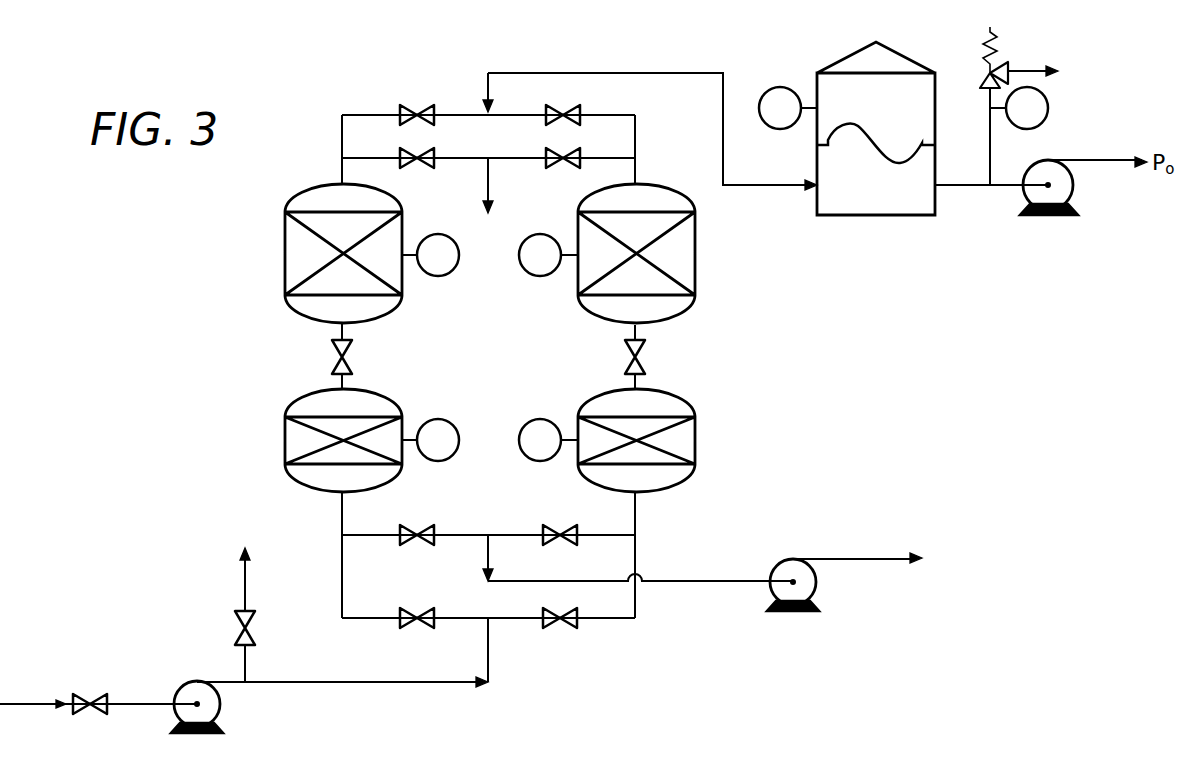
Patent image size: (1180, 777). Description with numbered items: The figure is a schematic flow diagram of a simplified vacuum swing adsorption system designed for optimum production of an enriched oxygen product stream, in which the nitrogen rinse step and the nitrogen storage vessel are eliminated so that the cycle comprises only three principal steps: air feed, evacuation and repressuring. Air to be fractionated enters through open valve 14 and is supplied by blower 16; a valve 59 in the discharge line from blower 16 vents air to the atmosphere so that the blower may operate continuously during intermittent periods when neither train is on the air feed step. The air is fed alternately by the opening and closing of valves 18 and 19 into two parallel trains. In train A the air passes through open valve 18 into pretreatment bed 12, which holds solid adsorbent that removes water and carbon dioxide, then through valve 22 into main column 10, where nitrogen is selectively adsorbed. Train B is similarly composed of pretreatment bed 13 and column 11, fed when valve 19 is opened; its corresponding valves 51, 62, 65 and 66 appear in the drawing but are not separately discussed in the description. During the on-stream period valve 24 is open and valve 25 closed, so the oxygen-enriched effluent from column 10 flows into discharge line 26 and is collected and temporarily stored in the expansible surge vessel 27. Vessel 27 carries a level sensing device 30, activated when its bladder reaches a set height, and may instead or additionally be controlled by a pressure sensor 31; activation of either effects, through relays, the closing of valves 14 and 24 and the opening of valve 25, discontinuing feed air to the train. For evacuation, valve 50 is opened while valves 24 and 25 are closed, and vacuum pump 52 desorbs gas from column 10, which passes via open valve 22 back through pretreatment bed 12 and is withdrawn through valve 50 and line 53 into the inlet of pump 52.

The adsorbent column 10 is at (318, 314).
The adsorbent column 11 is at (667, 310).
The adsorbent bed 12 is at (321, 488).
The adsorbent bed 13 is at (660, 486).
The valve 14 is at (98, 698).
The blower 16 is at (212, 704).
The valve 18 is at (410, 626).
The valve 19 is at (568, 627).
The valve 22 is at (355, 354).
The valve 24 is at (405, 106).
The valve 25 is at (424, 168).
The discharge line 26 is at (772, 192).
The surge vessel 27 is at (862, 208).
The level sensing device 30 is at (774, 98).
The pressure sensor 31 is at (1049, 108).
The valve 50 is at (425, 528).
The valve 51 is at (552, 526).
The vacuum pump 52 is at (815, 582).
The line 53 is at (706, 584).
The valve 59 is at (240, 622).
The valve between vessels 11 and 13 62 is at (628, 356).
The valve 65 is at (550, 168).
The valve 66 is at (576, 108).